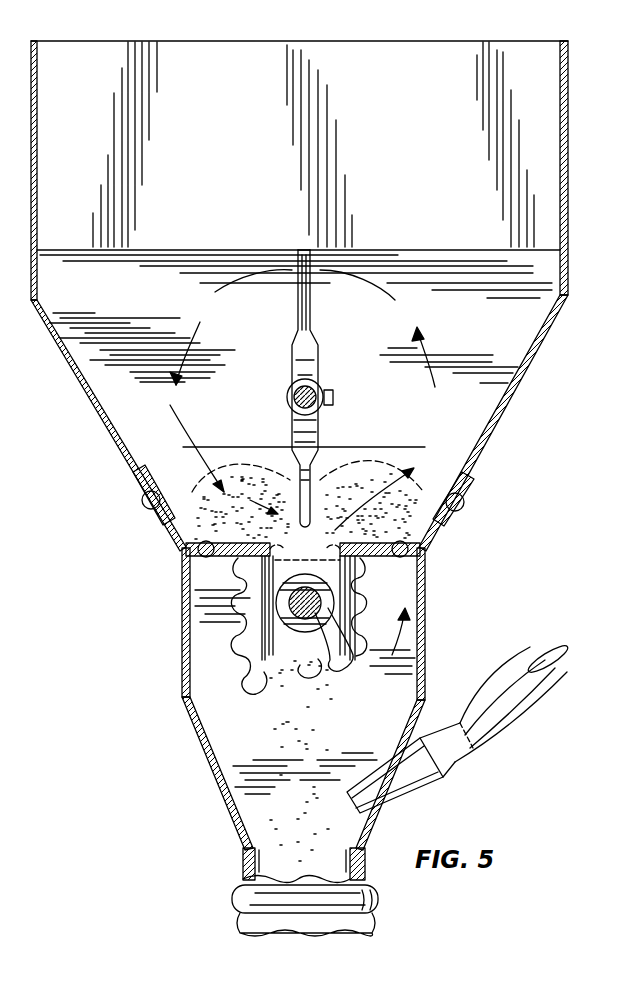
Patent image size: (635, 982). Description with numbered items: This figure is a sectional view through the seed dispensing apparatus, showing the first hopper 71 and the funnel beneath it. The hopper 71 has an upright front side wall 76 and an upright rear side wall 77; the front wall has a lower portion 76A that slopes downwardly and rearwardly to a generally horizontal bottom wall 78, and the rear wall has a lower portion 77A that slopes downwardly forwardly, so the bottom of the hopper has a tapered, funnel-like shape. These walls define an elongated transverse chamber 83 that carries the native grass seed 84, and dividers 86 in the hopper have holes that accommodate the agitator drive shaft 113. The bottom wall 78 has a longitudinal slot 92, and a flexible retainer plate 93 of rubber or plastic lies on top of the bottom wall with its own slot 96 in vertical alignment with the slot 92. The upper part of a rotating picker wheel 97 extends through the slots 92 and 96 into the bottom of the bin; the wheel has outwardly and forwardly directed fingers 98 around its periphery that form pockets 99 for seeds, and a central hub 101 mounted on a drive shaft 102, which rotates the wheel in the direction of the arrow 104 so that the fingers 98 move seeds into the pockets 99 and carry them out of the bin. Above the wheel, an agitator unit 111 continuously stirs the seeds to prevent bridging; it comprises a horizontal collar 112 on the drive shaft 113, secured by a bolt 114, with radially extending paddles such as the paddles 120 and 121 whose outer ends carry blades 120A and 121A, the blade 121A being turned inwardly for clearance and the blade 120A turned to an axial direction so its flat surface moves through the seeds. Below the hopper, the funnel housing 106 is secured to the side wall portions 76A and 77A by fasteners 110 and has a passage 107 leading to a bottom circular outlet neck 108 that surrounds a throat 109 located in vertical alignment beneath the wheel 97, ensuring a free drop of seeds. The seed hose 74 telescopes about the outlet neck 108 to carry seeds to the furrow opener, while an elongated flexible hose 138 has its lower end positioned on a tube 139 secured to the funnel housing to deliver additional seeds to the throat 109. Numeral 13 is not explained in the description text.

The dispensing head housing 13 is at (180, 752).
The first hopper 71 is at (98, 438).
The seed tube or hose 74 is at (246, 901).
The upright front side wall 76 is at (568, 113).
The lower portion of side wall 76 76A is at (543, 338).
The upright rear side wall 77 is at (37, 109).
The lower portion of side wall 77 77A is at (68, 348).
The bottom wall 78 is at (210, 568).
The chamber or compartment 83 is at (260, 66).
The native grass seed 84 is at (430, 470).
The dividers 86 is at (484, 248).
The longitudinal slot or elongated opening 92 is at (421, 563).
The flexible member or retainer plate 93 is at (183, 546).
The elongated slot or opening 96 is at (307, 500).
The picker wheel 97 is at (255, 620).
The fingers 98 is at (300, 690).
The pockets or cavities 99 is at (306, 700).
The central hub or boss 101 is at (330, 680).
The drive shaft 102 is at (322, 612).
The arrow 104 is at (412, 630).
The housing or casing 106 is at (218, 786).
The passage 107 is at (220, 722).
The bottom circular outlet neck 108 is at (262, 862).
The throat 109 is at (326, 856).
The fasteners 110 is at (140, 509).
The agitator unit 111 is at (372, 243).
The horizontal collar or sleeve 112 is at (312, 386).
The drive shaft 113 is at (297, 396).
The bolt 114 is at (334, 399).
The paddle 120 is at (300, 428).
The blade or hand 120A is at (322, 470).
The paddle 121 is at (318, 342).
The blade or hand 121A is at (298, 282).
The elongated flexible hose 138 is at (515, 705).
The tube 139 is at (398, 791).